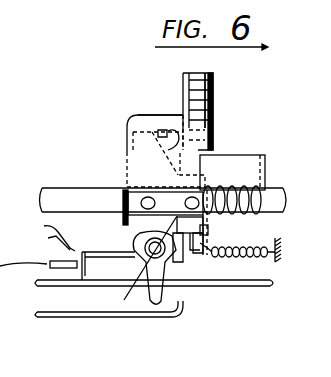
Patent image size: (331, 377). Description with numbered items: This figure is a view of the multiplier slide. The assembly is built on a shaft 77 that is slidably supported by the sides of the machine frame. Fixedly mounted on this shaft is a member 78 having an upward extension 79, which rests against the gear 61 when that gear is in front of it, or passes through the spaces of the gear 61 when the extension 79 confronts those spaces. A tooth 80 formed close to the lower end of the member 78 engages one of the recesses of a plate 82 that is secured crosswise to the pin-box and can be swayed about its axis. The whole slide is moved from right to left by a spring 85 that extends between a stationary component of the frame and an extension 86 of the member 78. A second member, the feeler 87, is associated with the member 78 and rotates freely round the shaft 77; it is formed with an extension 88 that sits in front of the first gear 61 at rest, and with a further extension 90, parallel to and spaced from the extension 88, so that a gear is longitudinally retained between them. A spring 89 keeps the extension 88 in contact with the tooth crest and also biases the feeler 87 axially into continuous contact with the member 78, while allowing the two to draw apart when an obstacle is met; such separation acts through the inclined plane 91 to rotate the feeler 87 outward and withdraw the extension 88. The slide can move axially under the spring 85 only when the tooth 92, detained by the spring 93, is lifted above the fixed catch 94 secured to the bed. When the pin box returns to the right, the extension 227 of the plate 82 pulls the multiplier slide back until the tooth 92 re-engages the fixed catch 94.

The gear 61 is at (240, 50).
The extension of the feeler 88 is at (213, 101).
The spring 89 is at (232, 183).
The inclined plane 91 is at (170, 140).
The upward extension 79 is at (152, 118).
The feeler 87 is at (143, 152).
The shaft 77 is at (65, 187).
The member 78 is at (124, 222).
The extension of member 78 86 is at (203, 253).
The spring 85 is at (252, 253).
The tooth 92 is at (44, 226).
The fixed catch 94 is at (86, 265).
The extension of the feeler 90 is at (37, 287).
The tooth 80 is at (151, 303).
The spring 93 is at (124, 300).
The plate 82 is at (70, 317).
The extension of plate 82 227 is at (183, 306).